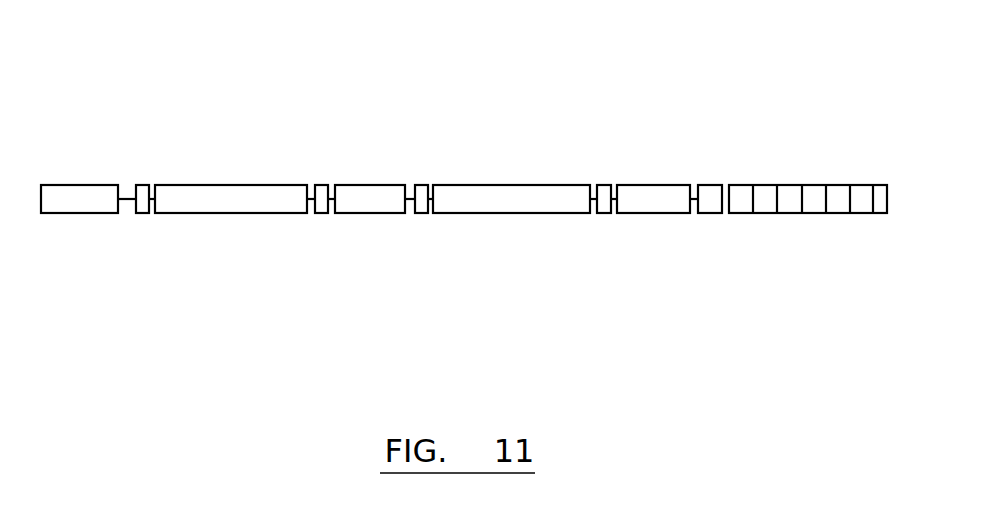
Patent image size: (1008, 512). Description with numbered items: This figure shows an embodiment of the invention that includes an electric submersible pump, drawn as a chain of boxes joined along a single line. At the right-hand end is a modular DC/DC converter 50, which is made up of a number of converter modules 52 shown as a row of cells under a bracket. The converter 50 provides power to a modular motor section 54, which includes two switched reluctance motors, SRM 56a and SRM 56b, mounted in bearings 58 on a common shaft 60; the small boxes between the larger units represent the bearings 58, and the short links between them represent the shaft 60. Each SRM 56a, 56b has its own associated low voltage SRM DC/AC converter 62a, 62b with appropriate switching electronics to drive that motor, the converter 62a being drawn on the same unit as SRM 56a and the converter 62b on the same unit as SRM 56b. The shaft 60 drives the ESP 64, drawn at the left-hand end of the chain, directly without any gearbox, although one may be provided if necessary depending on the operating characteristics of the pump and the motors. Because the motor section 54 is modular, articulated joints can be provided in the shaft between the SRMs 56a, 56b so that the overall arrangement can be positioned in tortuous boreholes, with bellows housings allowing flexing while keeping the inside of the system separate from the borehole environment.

The modular DC/DC converter 50 is at (807, 230).
The converter module 52 is at (743, 204).
The modular motor section 54 is at (374, 216).
The SRM 56a is at (512, 216).
The SRM 56b is at (233, 216).
The bearing 58 is at (142, 185).
The common shaft 60 is at (410, 187).
The low voltage SRM DC/AC converter 62a is at (511, 200).
The low voltage SRM DC/AC converter 62b is at (231, 200).
The ESP 64 is at (80, 216).